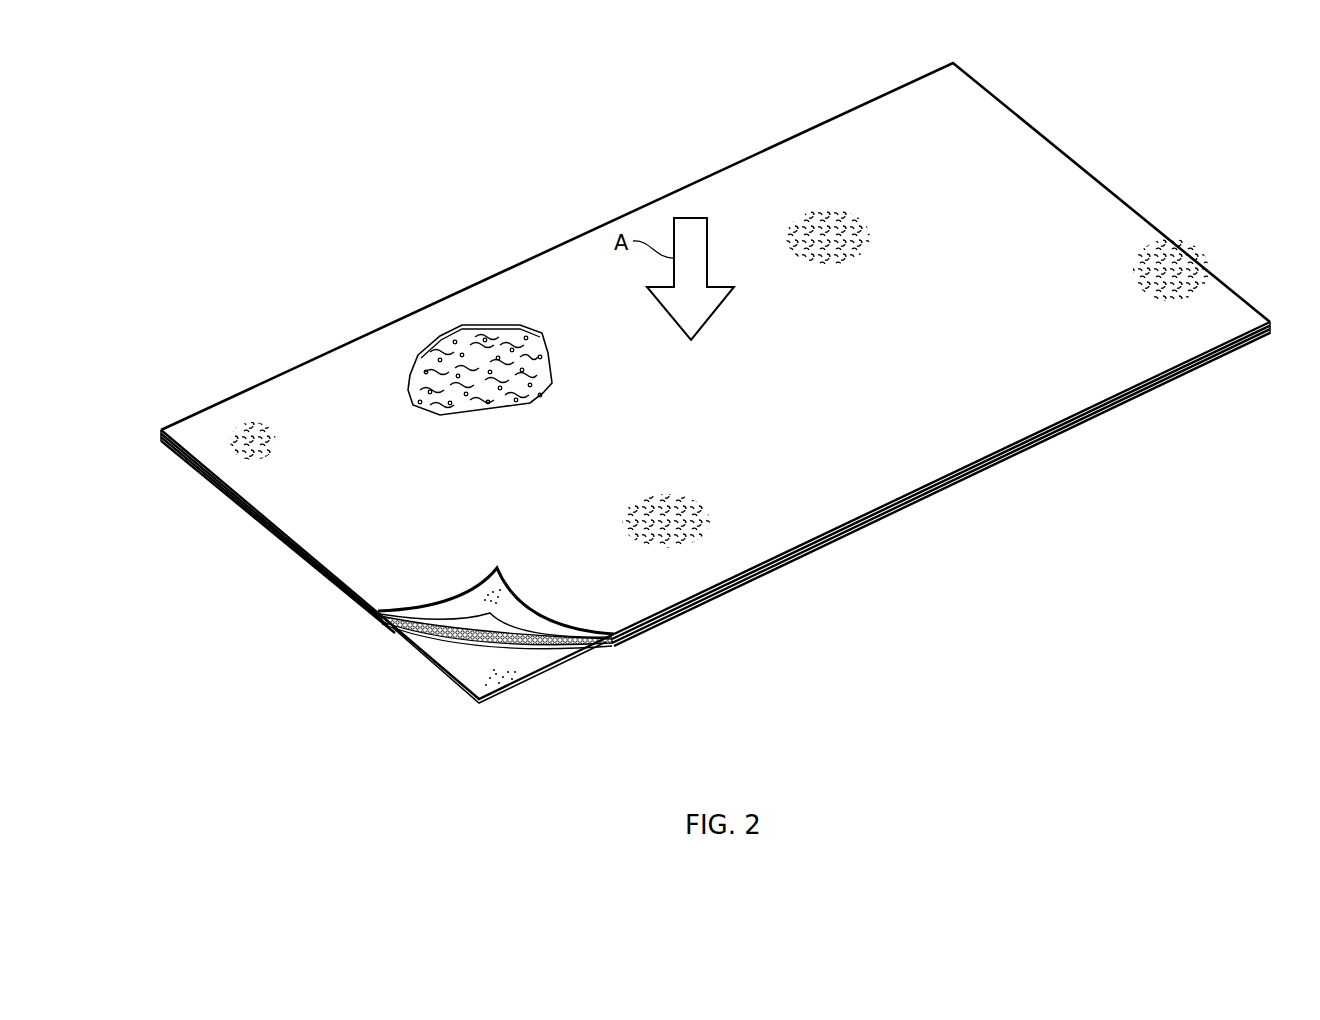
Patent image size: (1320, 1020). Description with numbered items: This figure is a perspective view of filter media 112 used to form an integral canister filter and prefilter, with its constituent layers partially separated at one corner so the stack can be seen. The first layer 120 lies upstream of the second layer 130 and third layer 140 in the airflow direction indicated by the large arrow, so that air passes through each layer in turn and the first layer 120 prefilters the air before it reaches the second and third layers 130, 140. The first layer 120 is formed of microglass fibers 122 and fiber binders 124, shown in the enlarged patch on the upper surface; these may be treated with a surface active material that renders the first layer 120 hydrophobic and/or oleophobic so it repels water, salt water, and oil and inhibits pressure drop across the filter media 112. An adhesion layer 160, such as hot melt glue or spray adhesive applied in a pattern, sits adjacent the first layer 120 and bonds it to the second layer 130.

The filter media 112 is at (266, 192).
The first layer 120 is at (503, 570).
The microglass fibers 122 is at (503, 352).
The fiber binders 124 is at (552, 358).
The second layer 130 is at (423, 641).
The third layer 140 is at (527, 663).
The adhesion layer 160 is at (533, 633).